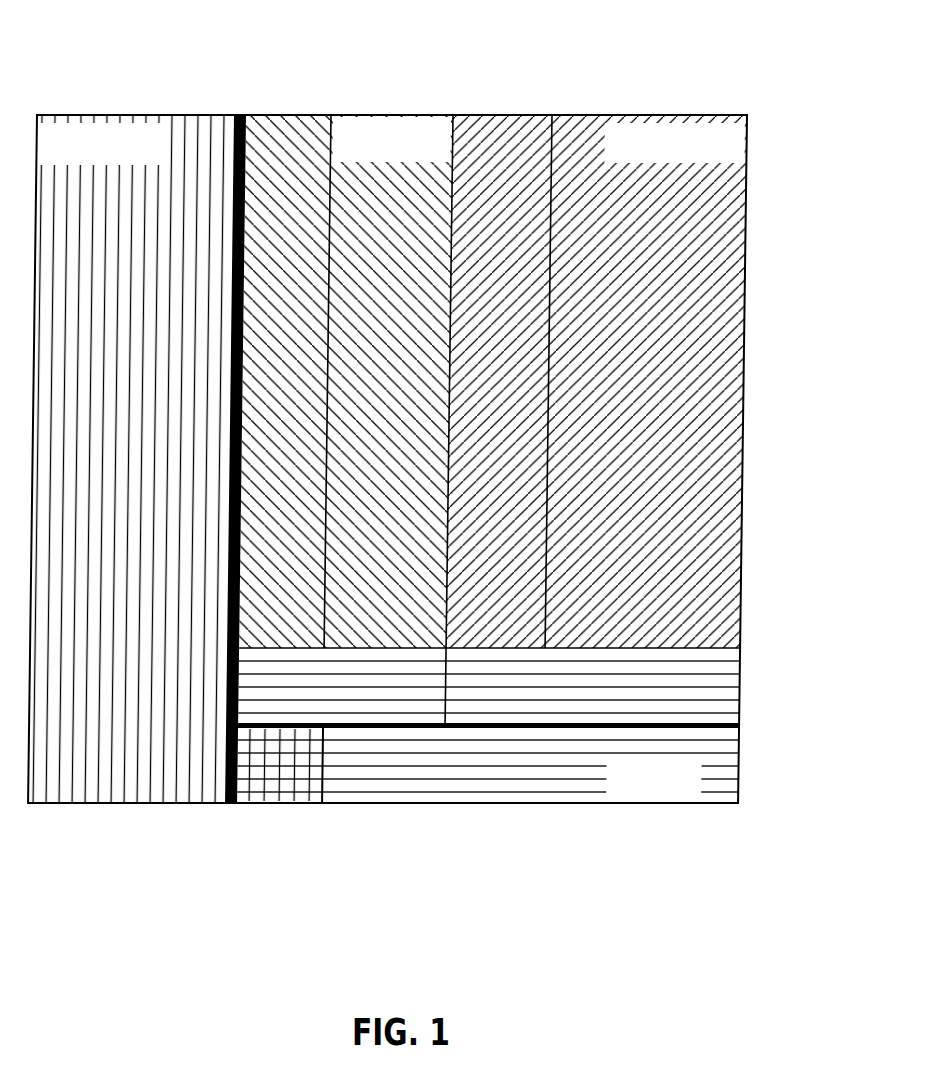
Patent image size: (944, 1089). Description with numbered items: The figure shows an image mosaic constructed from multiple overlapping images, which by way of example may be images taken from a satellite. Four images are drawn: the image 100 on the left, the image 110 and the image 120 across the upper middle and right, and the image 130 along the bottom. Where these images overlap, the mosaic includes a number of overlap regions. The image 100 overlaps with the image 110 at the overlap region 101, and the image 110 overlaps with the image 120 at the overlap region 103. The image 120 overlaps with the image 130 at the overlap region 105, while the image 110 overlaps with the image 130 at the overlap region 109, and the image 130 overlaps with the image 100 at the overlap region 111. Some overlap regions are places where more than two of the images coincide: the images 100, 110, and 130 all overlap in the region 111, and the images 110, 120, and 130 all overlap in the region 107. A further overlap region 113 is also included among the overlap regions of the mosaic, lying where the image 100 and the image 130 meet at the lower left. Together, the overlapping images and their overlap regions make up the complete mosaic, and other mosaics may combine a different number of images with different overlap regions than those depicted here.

The image 100 is at (127, 159).
The overlap region 101 is at (285, 163).
The overlap region 103 is at (512, 170).
The overlap region 105 is at (689, 672).
The overlap region 107 is at (493, 698).
The overlap region 109 is at (397, 698).
The image 110 is at (415, 157).
The overlap region 111 is at (275, 695).
The overlap region 113 is at (275, 770).
The image 120 is at (694, 159).
The image 130 is at (689, 791).